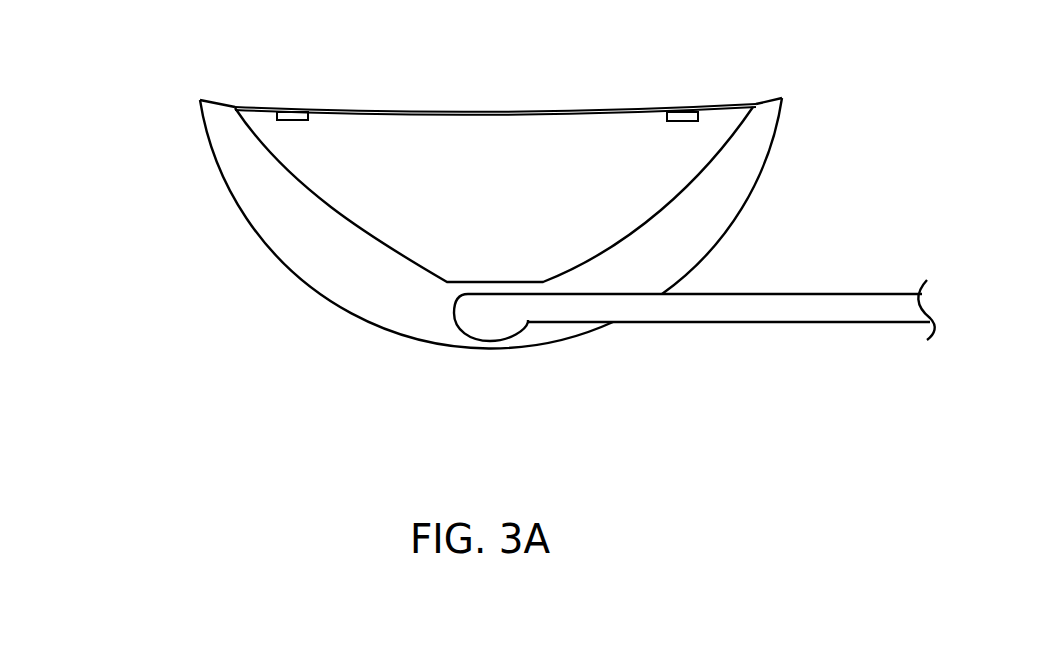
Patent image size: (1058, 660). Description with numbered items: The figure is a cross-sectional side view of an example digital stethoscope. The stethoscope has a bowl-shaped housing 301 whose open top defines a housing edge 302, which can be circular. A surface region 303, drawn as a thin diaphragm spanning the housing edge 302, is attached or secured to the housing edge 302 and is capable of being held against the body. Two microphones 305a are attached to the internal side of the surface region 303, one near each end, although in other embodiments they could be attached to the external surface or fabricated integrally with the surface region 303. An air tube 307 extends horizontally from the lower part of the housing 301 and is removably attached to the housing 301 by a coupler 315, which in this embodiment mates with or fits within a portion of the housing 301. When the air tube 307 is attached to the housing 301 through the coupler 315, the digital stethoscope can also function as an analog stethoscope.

The housing 301 is at (374, 323).
The housing edge 302 is at (777, 101).
The surface region 303 is at (503, 111).
The microphones 305a is at (902, 188).
The air tube 307 is at (836, 322).
The coupler 315 is at (497, 341).